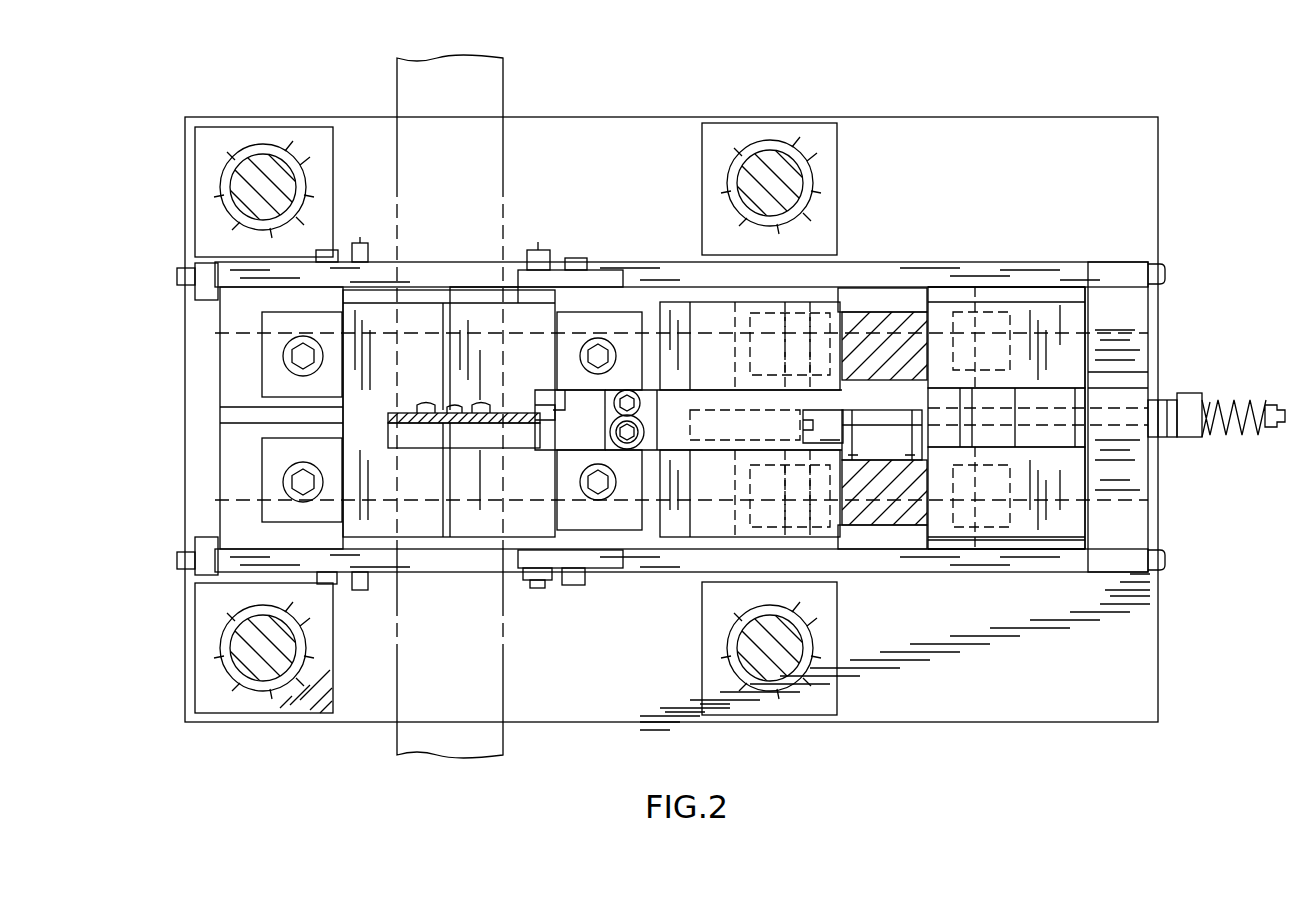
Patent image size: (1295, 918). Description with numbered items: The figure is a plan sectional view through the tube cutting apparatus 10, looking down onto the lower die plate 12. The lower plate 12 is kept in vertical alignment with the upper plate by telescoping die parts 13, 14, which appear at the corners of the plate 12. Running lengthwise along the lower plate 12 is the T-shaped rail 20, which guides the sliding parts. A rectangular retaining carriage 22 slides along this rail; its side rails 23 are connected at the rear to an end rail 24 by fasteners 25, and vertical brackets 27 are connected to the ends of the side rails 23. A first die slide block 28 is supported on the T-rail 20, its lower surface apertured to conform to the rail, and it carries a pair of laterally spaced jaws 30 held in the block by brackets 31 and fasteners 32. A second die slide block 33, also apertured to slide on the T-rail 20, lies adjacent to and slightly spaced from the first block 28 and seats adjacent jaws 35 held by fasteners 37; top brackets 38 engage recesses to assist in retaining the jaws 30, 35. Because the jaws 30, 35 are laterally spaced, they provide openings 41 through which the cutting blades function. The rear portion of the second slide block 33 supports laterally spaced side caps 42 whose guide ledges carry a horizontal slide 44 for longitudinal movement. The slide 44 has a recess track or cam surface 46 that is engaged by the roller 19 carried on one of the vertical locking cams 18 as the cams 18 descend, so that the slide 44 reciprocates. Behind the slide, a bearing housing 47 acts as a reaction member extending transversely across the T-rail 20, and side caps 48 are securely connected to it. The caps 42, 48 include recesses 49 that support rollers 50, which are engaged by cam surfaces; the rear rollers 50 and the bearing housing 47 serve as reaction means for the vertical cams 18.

The tube cutting apparatus 10 is at (1132, 630).
The lower die plate 12 is at (1120, 685).
The telescoping die part 13 is at (280, 150).
The telescoping die part 14 is at (262, 167).
The locking cam 18 is at (888, 322).
The roller 19 is at (820, 438).
The T-shaped rail 20 is at (1063, 300).
The retaining carriage 22 is at (972, 562).
The side rail 23 is at (935, 282).
The end rail 24 is at (1135, 520).
The fastener 25 is at (1168, 272).
The vertical bracket 27 is at (205, 542).
The first die slide block 28 is at (235, 490).
The jaw 30 is at (410, 302).
The bracket 31 is at (305, 272).
The fastener 32 is at (364, 262).
The second die slide block 33 is at (600, 540).
The jaw 35 is at (510, 545).
The fastener 37 is at (577, 260).
The top bracket 38 is at (280, 358).
The opening 41 is at (390, 410).
The side cap 42 is at (692, 310).
The horizontal slide 44 is at (688, 420).
The cam surface 46 is at (810, 412).
The bearing housing 47 is at (1050, 397).
The side cap 48 is at (1030, 320).
The recess 49 is at (760, 335).
The roller 50 is at (830, 300).